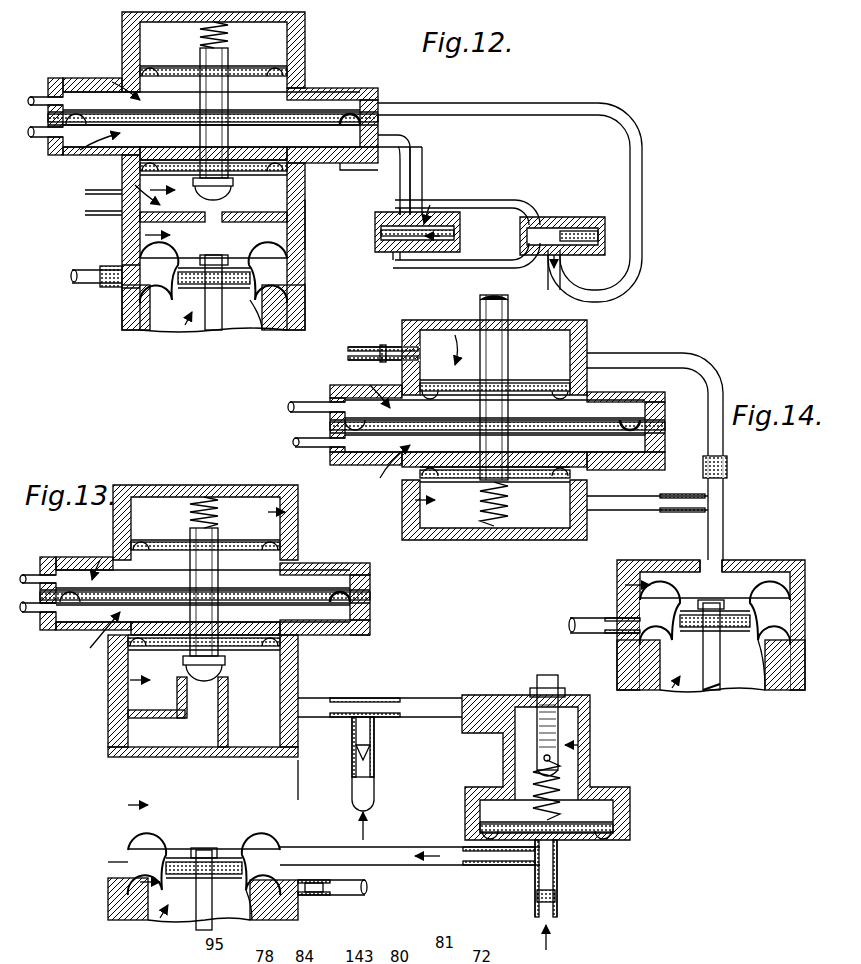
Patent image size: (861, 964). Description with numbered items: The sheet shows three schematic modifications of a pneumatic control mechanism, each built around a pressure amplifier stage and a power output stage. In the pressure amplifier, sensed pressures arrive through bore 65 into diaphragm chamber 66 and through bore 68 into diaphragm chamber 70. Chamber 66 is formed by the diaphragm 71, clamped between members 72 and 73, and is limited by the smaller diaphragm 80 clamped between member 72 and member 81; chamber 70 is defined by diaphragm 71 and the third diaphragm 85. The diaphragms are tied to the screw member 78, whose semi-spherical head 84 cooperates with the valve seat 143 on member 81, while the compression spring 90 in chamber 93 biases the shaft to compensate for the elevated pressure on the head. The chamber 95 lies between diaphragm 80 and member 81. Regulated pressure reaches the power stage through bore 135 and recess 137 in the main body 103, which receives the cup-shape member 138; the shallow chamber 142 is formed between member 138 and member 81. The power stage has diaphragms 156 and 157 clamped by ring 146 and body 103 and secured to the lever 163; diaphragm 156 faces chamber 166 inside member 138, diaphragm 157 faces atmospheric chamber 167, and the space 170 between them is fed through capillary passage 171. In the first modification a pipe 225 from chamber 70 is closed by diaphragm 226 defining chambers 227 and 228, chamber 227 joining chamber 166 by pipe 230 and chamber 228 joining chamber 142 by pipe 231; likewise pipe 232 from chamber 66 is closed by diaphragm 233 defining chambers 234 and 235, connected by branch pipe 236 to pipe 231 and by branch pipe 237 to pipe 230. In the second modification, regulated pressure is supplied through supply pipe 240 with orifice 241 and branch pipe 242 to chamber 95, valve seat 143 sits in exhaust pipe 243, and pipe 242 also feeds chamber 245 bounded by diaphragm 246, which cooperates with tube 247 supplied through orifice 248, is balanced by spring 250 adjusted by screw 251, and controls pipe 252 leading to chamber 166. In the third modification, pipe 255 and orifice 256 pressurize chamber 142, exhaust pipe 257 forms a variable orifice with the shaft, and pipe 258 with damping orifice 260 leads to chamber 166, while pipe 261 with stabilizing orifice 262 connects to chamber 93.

In FIG. 12, the bore 65 is at (40, 138).
In FIG. 14, the bore 65 is at (314, 402).
In FIG. 13, the bore 65 is at (28, 612).
In FIG. 12, the diaphragm chamber 66 is at (80, 152).
In FIG. 14, the diaphragm chamber 66 is at (370, 385).
In FIG. 13, the diaphragm chamber 66 is at (91, 634).
In FIG. 12, the bore 68 is at (40, 97).
In FIG. 14, the bore 68 is at (312, 447).
In FIG. 13, the bore 68 is at (26, 575).
In FIG. 12, the diaphragm chamber 70 is at (116, 82).
In FIG. 14, the diaphragm chamber 70 is at (380, 478).
In FIG. 13, the diaphragm chamber 70 is at (100, 560).
In FIG. 12, the diaphragm 71 is at (368, 119).
In FIG. 14, the diaphragm 71 is at (642, 418).
In FIG. 13, the diaphragm 71 is at (358, 590).
In FIG. 12, the member 72 is at (342, 167).
In FIG. 13, the member 72 is at (366, 616).
In FIG. 12, the member 73 is at (345, 89).
In FIG. 13, the member 73 is at (312, 563).
In FIG. 12, the screw member 78 is at (200, 108).
In FIG. 14, the screw member 78 is at (508, 444).
In FIG. 13, the screw member 78 is at (218, 580).
In FIG. 12, the diaphragm 80 is at (296, 174).
In FIG. 14, the diaphragm 80 is at (580, 392).
In FIG. 13, the diaphragm 80 is at (292, 660).
In FIG. 12, the member 81 is at (298, 212).
In FIG. 12, the semi-spherical head 84 is at (205, 197).
In FIG. 13, the semi-spherical head 84 is at (214, 683).
In FIG. 12, the diaphragm 85 is at (297, 63).
In FIG. 14, the diaphragm 85 is at (556, 484).
In FIG. 13, the diaphragm 85 is at (290, 540).
In FIG. 12, the compression spring 90 is at (222, 40).
In FIG. 14, the compression spring 90 is at (484, 500).
In FIG. 13, the compression spring 90 is at (220, 516).
In FIG. 12, the chamber 93 is at (298, 34).
In FIG. 14, the chamber 93 is at (415, 500).
In FIG. 13, the chamber 93 is at (285, 512).
In FIG. 12, the chamber 95 is at (296, 190).
In FIG. 13, the chamber 95 is at (130, 680).
In FIG. 12, the main body 103 is at (298, 305).
In FIG. 13, the main body 103 is at (298, 915).
In FIG. 12, the bore 135 is at (74, 276).
In FIG. 13, the bore 135 is at (362, 896).
In FIG. 12, the recess 137 is at (88, 206).
In FIG. 12, the cup-shape member 138 is at (306, 240).
In FIG. 13, the cup-shape member 138 is at (298, 779).
In FIG. 12, the shallow chamber 142 is at (135, 185).
In FIG. 14, the shallow chamber 142 is at (458, 330).
In FIG. 12, the valve seat 143 is at (222, 196).
In FIG. 13, the valve seat 143 is at (224, 665).
In FIG. 12, the ring 146 is at (298, 283).
In FIG. 14, the ring 146 is at (610, 630).
In FIG. 13, the ring 146 is at (108, 870).
In FIG. 12, the diaphragm 156 is at (272, 258).
In FIG. 14, the diaphragm 156 is at (775, 588).
In FIG. 13, the diaphragm 156 is at (255, 849).
In FIG. 12, the diaphragm 157 is at (248, 328).
In FIG. 14, the diaphragm 157 is at (732, 670).
In FIG. 13, the diaphragm 157 is at (236, 920).
In FIG. 12, the lever 163 is at (212, 330).
In FIG. 14, the lever 163 is at (716, 693).
In FIG. 13, the lever 163 is at (200, 928).
In FIG. 12, the chamber 166 is at (145, 234).
In FIG. 14, the chamber 166 is at (625, 585).
In FIG. 13, the chamber 166 is at (128, 805).
In FIG. 12, the chamber 167 is at (186, 326).
In FIG. 14, the chamber 167 is at (672, 690).
In FIG. 13, the chamber 167 is at (160, 918).
In FIG. 12, the space 170 is at (125, 307).
In FIG. 13, the space 170 is at (140, 882).
In FIG. 12, the capillary passage 171 is at (138, 268).
In FIG. 12, the pipe 225 is at (482, 104).
In FIG. 12, the diaphragm 226 is at (545, 210).
In FIG. 12, the chamber 227 is at (550, 268).
In FIG. 12, the chamber 228 is at (580, 218).
In FIG. 12, the pipe 230 is at (466, 264).
In FIG. 12, the pipe 231 is at (520, 200).
In FIG. 12, the pipe 232 is at (420, 151).
In FIG. 12, the diaphragm 233 is at (458, 222).
In FIG. 12, the chamber 234 is at (430, 205).
In FIG. 12, the chamber 235 is at (456, 238).
In FIG. 12, the branch pipe 236 is at (405, 206).
In FIG. 12, the branch pipe 237 is at (395, 256).
In FIG. 13, the supply pipe 240 is at (375, 778).
In FIG. 13, the orifice 241 is at (356, 755).
In FIG. 13, the branch pipe 242 is at (346, 706).
In FIG. 13, the exhaust pipe 243 is at (229, 718).
In FIG. 13, the chamber 245 is at (590, 740).
In FIG. 13, the diaphragm 246 is at (612, 836).
In FIG. 13, the tube 247 is at (560, 876).
In FIG. 13, the orifice 248 is at (560, 900).
In FIG. 13, the spring 250 is at (572, 782).
In FIG. 13, the screw 251 is at (590, 719).
In FIG. 13, the pipe 252 is at (440, 847).
In FIG. 14, the pipe 255 is at (366, 347).
In FIG. 14, the orifice 256 is at (390, 345).
In FIG. 14, the exhaust pipe 257 is at (506, 297).
In FIG. 14, the pipe 258 is at (730, 392).
In FIG. 14, the damping orifice 260 is at (724, 468).
In FIG. 14, the pipe 261 is at (655, 496).
In FIG. 14, the stabilizing orifice 262 is at (680, 511).